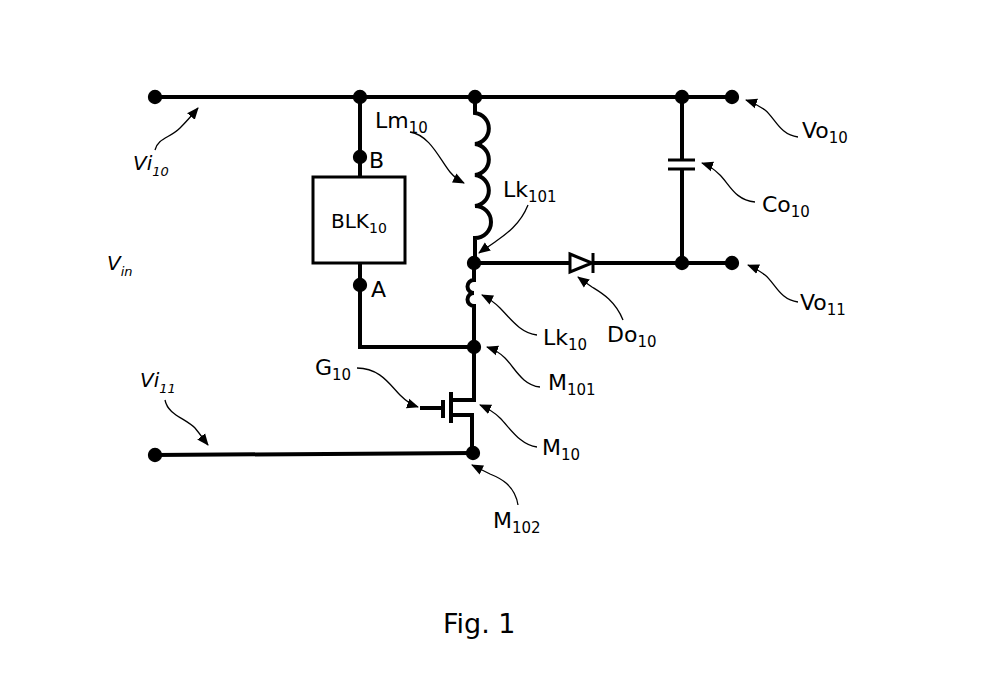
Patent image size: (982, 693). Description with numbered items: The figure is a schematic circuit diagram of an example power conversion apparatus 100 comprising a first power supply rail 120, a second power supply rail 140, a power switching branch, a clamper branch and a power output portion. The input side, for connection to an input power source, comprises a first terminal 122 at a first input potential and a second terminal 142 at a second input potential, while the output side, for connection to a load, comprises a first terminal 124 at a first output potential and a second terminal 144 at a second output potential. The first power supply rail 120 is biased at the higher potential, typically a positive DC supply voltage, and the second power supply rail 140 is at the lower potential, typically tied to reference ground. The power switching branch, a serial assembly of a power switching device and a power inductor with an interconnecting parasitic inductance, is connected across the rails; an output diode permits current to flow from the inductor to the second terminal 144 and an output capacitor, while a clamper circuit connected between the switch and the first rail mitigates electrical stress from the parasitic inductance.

The power conversion apparatus 100 is at (73, 41).
The first power supply rail 120 is at (577, 38).
The first terminal of the input side 122 is at (160, 94).
The first terminal of the output side 124 is at (736, 95).
The second power supply rail 140 is at (323, 507).
The second terminal of the input side 142 is at (148, 456).
The second terminal of the output side 144 is at (733, 270).